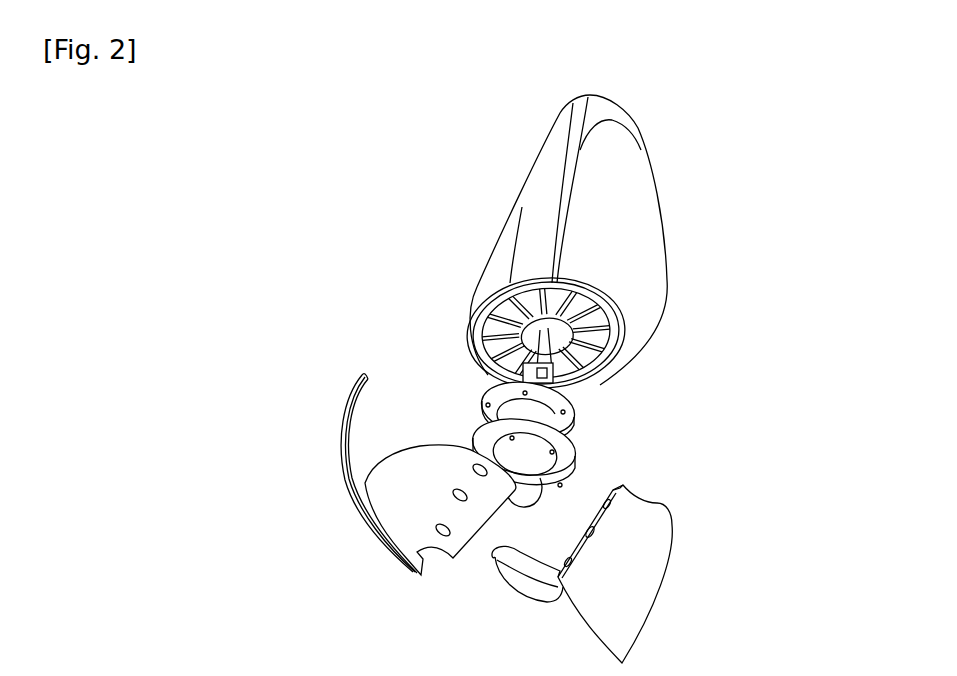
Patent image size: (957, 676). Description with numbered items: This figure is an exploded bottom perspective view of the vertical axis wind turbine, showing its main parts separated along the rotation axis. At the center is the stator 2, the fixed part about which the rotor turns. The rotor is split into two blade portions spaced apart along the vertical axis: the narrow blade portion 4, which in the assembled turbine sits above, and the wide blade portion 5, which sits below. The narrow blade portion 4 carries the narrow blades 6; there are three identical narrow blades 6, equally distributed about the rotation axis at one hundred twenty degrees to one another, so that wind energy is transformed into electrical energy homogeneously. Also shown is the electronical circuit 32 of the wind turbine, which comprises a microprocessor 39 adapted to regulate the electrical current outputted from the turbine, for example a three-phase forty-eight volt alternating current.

The stator 2 is at (560, 485).
The narrow blade portion 4 is at (618, 240).
The wide blade portion 5 is at (683, 575).
The narrow blade 6 is at (663, 258).
The electronical circuit 32 is at (580, 388).
The microprocessor 39 is at (477, 355).